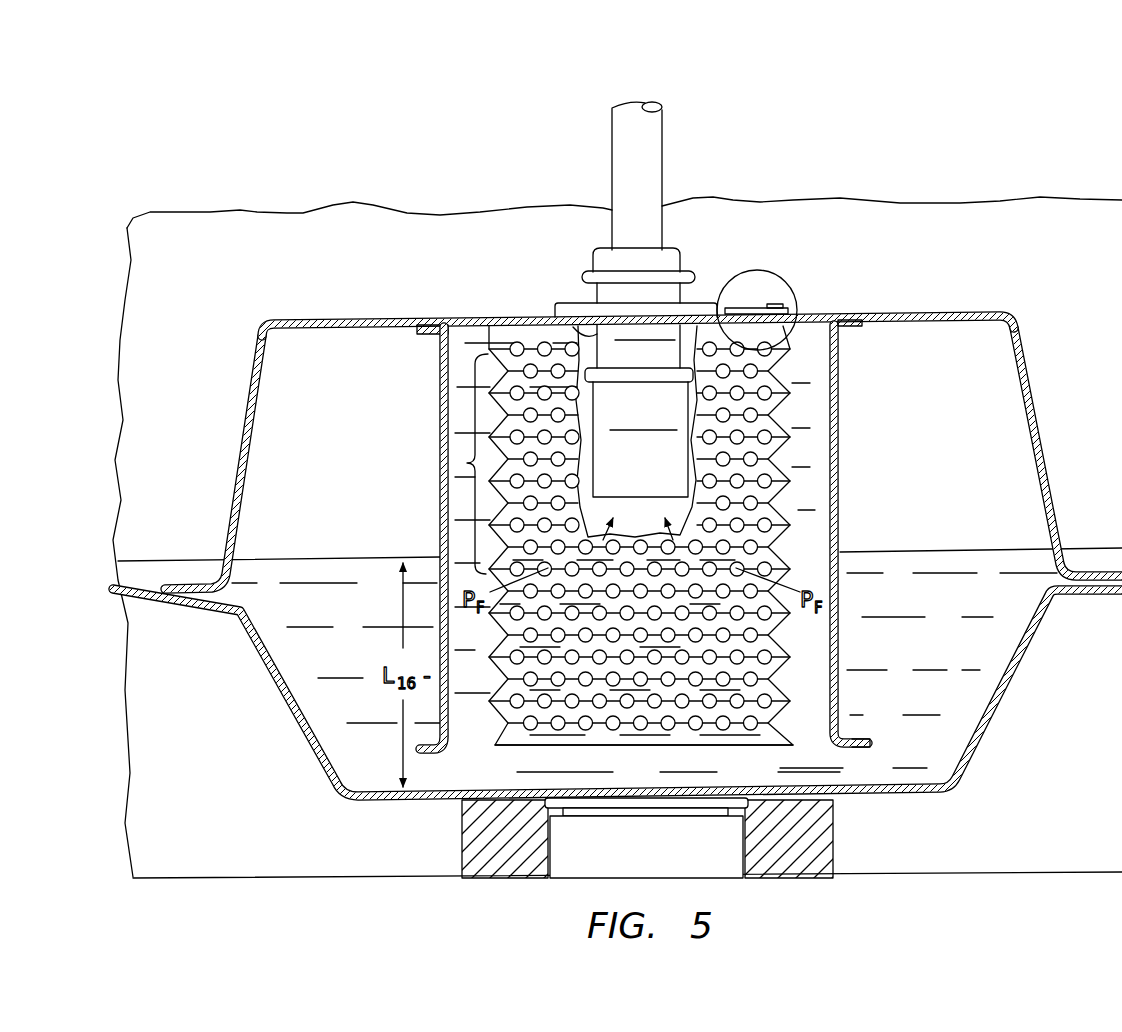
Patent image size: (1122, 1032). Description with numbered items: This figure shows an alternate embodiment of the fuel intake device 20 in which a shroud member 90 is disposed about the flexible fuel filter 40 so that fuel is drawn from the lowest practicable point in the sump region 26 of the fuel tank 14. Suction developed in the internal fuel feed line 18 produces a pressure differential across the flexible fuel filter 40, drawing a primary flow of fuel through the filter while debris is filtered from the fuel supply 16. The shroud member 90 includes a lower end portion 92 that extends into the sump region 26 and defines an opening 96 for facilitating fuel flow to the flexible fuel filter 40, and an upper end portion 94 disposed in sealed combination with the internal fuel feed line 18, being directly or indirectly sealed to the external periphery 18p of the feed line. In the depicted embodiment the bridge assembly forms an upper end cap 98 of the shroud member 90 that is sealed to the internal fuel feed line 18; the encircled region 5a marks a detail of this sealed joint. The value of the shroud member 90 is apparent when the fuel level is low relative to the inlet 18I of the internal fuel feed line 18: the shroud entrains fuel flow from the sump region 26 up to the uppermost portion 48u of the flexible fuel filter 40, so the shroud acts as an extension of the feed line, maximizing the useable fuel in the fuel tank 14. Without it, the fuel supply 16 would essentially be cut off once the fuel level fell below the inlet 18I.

The fuel tank 14 is at (1062, 795).
The fuel supply 16 is at (978, 560).
The internal fuel feed line 18 is at (655, 286).
The external periphery of the internal fuel feed line 18p is at (573, 327).
The inlet of the internal fuel feed line 18I is at (648, 503).
The fuel intake device 20 is at (935, 436).
The sump region 26 is at (335, 602).
The flexible fuel filter 40 is at (790, 463).
The uppermost portion of the flexible fuel filter 48u is at (467, 463).
The detail region FIG. 5a is at (790, 277).
The shroud member 90 is at (840, 401).
The lower end portion 92 is at (863, 733).
The upper end portion 94 is at (848, 334).
The opening 96 is at (485, 748).
The upper end cap 98 is at (463, 316).